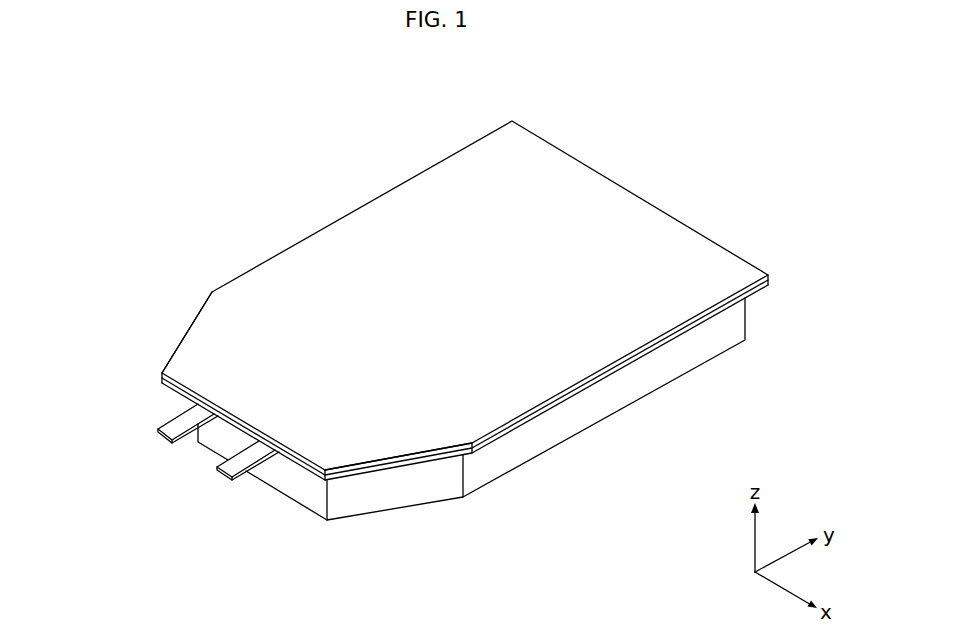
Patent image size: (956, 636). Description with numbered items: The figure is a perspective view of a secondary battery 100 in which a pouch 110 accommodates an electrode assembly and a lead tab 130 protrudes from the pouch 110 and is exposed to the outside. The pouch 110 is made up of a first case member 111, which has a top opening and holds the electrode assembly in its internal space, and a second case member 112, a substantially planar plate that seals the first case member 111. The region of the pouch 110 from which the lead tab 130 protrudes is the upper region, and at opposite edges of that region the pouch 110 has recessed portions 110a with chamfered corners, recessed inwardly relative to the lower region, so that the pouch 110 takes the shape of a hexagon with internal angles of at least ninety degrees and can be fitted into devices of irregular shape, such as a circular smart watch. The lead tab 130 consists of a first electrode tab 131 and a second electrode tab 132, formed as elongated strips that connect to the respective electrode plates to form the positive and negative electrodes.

The secondary battery 100 is at (736, 147).
The pouch 110 is at (597, 532).
The first case member 111 is at (495, 442).
The second case member 112 is at (535, 412).
The recessed portion 110a is at (178, 347).
The lead tab 130 is at (92, 410).
The first electrode tab 131 is at (172, 425).
The second electrode tab 132 is at (227, 468).